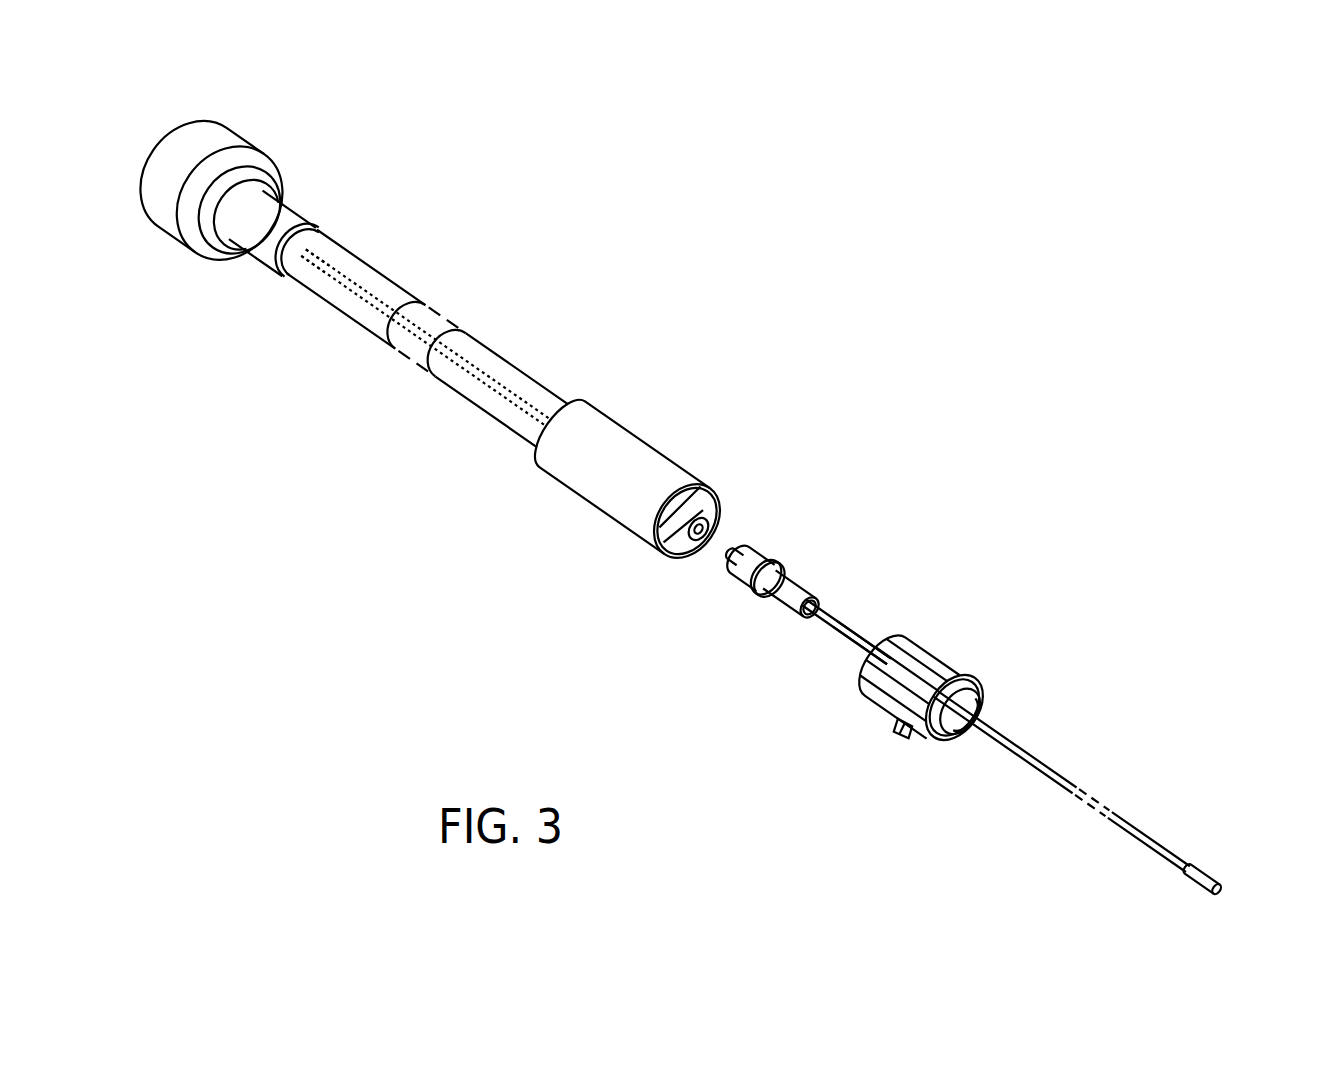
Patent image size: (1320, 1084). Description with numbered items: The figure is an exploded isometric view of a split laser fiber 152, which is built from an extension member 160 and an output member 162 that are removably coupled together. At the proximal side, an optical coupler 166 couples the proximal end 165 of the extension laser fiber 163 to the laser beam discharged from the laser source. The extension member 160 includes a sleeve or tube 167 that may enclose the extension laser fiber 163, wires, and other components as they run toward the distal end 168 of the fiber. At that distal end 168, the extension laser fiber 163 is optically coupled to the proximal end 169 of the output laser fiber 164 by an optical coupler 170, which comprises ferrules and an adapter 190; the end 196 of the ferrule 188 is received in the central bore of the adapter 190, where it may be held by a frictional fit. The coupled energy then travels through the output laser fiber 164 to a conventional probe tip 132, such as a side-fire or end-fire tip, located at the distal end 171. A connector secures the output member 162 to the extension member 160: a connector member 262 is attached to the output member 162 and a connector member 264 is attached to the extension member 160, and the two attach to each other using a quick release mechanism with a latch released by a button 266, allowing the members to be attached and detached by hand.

The optical coupler 166 is at (223, 137).
The extension member 160 is at (380, 284).
The proximal end 165 is at (317, 263).
The extension laser fiber 163 is at (467, 366).
The sleeve or tube 167 is at (453, 390).
The distal end 168 is at (537, 427).
The connector member 264 is at (652, 453).
The adapter 190 is at (694, 513).
The end of ferrule 196 is at (738, 547).
The ferrule 188 is at (795, 580).
The proximal end 169 is at (822, 610).
The output member 162 is at (850, 647).
The connector member 262 is at (940, 647).
The button 266 is at (897, 740).
The output laser fiber 164 is at (1033, 753).
The distal end 171 is at (1163, 847).
The probe tip 132 is at (1203, 880).
The split laser fiber 152 is at (950, 315).
The optical coupler 170 is at (663, 617).